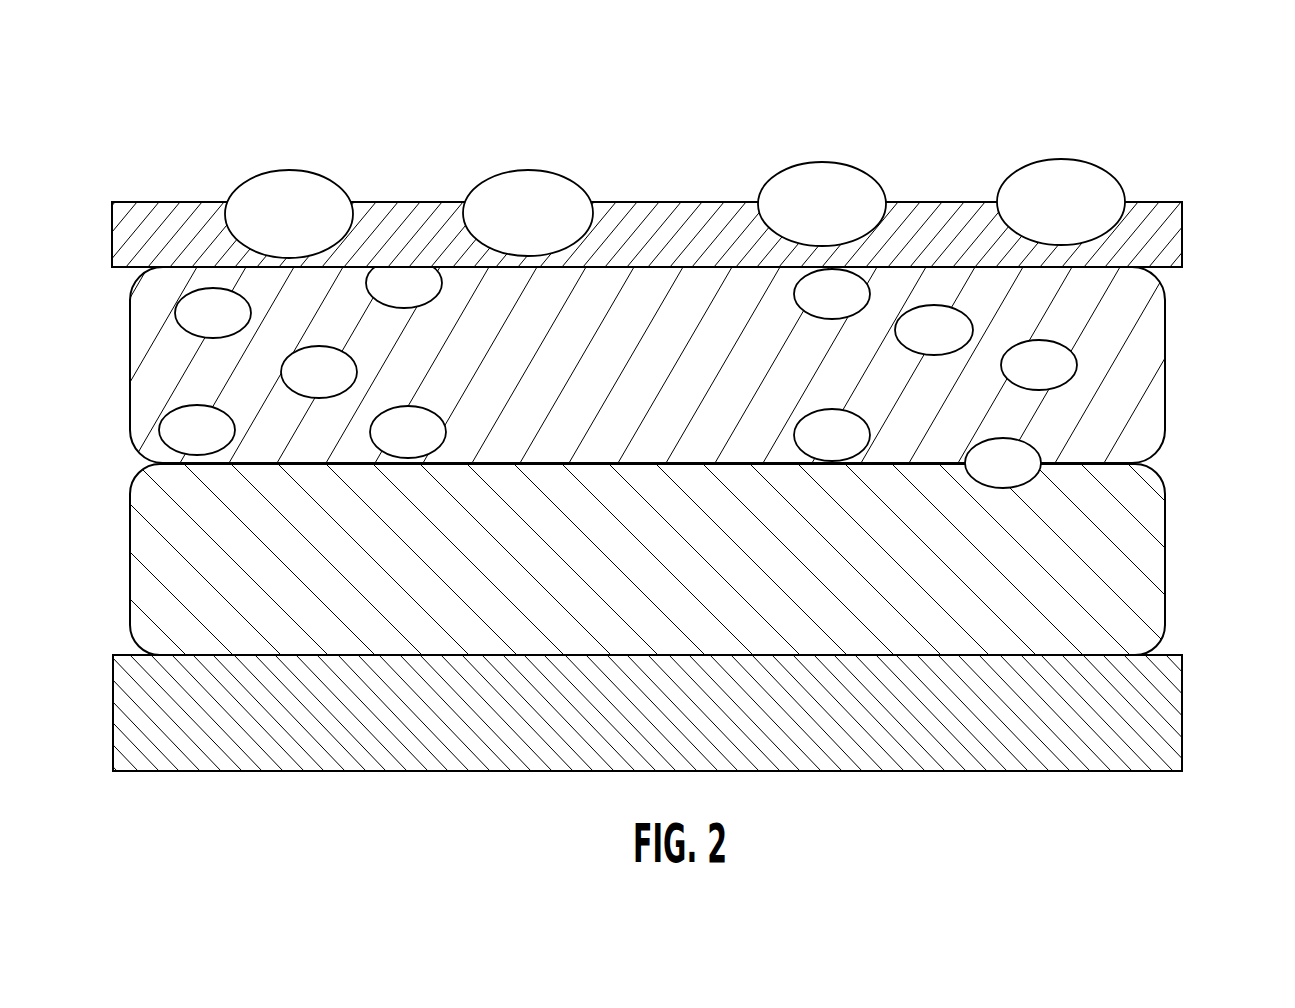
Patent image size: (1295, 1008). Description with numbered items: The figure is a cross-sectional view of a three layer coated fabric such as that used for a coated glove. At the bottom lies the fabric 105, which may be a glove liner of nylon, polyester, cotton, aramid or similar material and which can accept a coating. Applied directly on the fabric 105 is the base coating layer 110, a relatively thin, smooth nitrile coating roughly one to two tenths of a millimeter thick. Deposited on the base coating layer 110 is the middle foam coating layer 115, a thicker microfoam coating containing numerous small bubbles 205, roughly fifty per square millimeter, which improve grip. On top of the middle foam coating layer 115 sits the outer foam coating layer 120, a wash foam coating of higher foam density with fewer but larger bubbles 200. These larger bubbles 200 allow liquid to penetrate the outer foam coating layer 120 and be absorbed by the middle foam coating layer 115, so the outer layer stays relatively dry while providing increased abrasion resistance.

The fabric 105 is at (1130, 732).
The base coating layer 110 is at (1130, 523).
The middle foam coating layer 115 is at (1165, 407).
The outer foam coating layer 120 is at (1163, 243).
The bubbles 200 is at (1090, 160).
The bubbles 205 is at (880, 274).